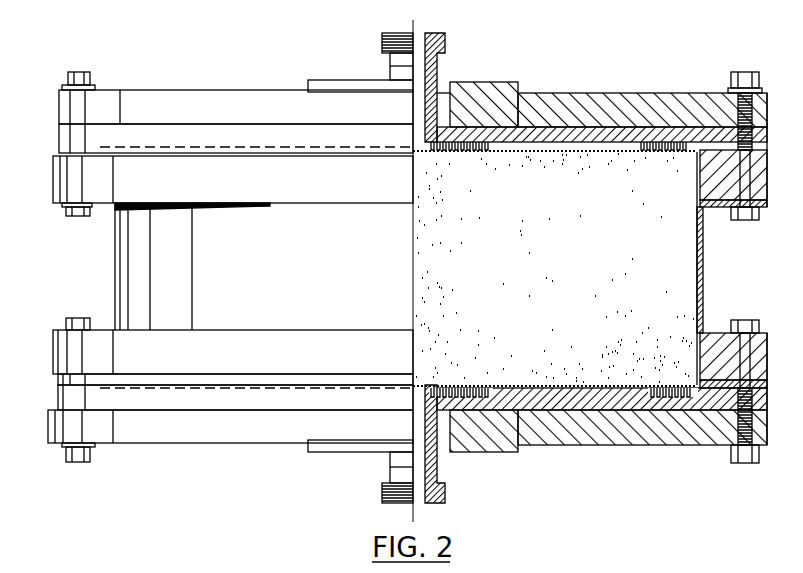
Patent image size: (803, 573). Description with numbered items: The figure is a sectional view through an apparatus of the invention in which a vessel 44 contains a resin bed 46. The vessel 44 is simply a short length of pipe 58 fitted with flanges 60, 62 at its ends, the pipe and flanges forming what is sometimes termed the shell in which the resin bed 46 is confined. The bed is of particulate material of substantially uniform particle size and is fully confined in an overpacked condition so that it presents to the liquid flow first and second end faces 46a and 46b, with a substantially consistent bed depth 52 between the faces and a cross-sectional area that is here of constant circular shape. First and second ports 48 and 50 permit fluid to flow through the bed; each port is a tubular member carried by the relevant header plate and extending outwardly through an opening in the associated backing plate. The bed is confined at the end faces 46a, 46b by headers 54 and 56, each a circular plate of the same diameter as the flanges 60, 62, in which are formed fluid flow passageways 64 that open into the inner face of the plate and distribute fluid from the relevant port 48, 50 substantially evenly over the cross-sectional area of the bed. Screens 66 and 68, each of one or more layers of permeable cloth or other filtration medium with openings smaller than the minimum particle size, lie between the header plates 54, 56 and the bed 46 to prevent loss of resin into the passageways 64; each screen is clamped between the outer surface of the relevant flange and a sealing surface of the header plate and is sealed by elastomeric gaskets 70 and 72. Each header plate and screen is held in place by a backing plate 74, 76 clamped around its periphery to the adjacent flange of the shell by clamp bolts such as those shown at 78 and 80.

The vessel 44 is at (82, 258).
The resin bed 46 is at (570, 287).
The first end face 46a is at (421, 150).
The second end face 46b is at (421, 386).
The first port 48 is at (446, 33).
The second port 50 is at (380, 493).
The bed depth 52 is at (443, 152).
The header 54 is at (752, 141).
The header 56 is at (760, 395).
The pipe 58 is at (114, 262).
The flange 60 is at (54, 182).
The flange 62 is at (54, 352).
The fluid flow passageways 64 is at (478, 140).
The screen 66 is at (652, 392).
The screen 68 is at (635, 146).
The gasket 70 is at (750, 380).
The gasket 72 is at (752, 155).
The backing plate 74 is at (695, 102).
The backing plate 76 is at (553, 425).
The clamp bolt 78 is at (745, 428).
The clamp bolt 80 is at (753, 105).